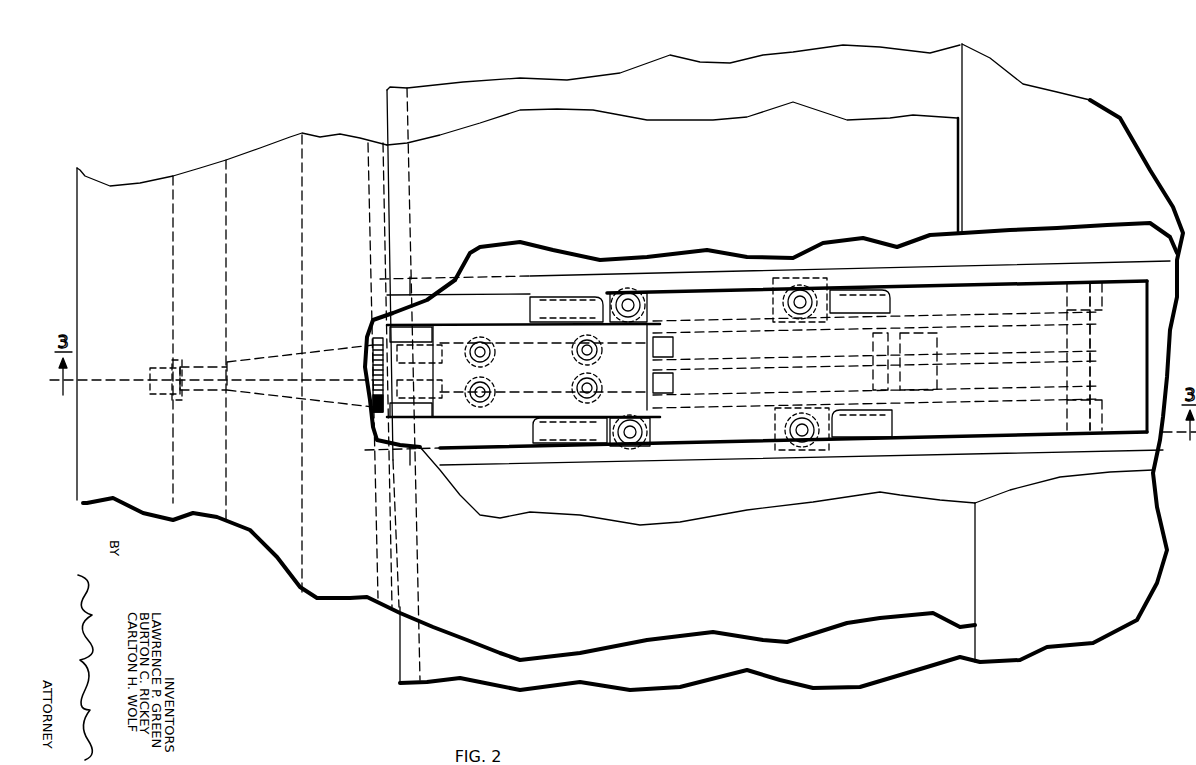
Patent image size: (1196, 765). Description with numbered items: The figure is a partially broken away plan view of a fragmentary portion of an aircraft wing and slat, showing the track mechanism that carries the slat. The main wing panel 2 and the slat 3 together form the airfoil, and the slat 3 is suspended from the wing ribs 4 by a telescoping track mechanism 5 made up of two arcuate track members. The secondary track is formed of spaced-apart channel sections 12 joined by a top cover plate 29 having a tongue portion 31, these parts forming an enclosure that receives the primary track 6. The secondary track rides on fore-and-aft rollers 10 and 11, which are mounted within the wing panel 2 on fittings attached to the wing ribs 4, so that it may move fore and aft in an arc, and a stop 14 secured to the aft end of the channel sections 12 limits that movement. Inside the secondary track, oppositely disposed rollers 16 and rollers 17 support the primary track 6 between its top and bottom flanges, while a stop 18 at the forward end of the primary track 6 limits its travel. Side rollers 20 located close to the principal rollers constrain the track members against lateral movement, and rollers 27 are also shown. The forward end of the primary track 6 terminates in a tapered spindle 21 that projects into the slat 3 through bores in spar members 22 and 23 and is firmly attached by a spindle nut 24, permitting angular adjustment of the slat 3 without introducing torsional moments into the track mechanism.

The main wing panel 2 is at (1003, 88).
The slat 3 is at (812, 122).
The wing ribs 4 is at (978, 273).
The telescoping track mechanism 5 is at (520, 314).
The primary track 6 is at (827, 362).
The fore rollers 10 is at (563, 307).
The aft rollers 11 is at (900, 298).
The channel sections 12 is at (950, 405).
The aft stop 14 is at (1123, 302).
The rollers 16 is at (432, 343).
The rollers 17 is at (673, 345).
The forward stop 18 is at (368, 343).
The side rollers 20 is at (507, 355).
The tapered spindle 21 is at (263, 363).
The spar member 22 is at (198, 158).
The spar member 23 is at (332, 130).
The spindle nut 24 is at (168, 388).
The roller 27 is at (660, 305).
The top cover plate 29 is at (1017, 332).
The tongue portion 31 is at (453, 393).